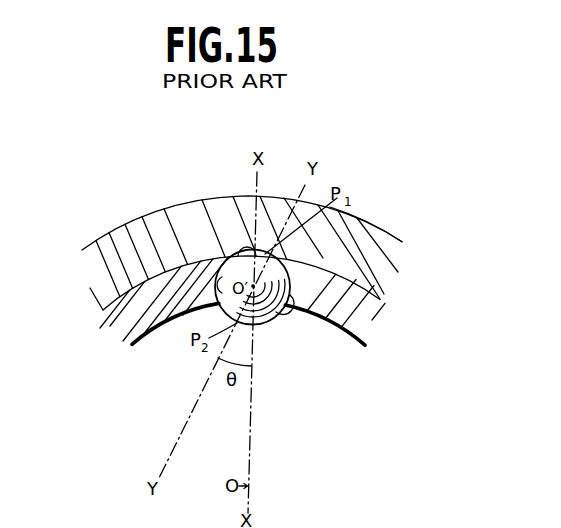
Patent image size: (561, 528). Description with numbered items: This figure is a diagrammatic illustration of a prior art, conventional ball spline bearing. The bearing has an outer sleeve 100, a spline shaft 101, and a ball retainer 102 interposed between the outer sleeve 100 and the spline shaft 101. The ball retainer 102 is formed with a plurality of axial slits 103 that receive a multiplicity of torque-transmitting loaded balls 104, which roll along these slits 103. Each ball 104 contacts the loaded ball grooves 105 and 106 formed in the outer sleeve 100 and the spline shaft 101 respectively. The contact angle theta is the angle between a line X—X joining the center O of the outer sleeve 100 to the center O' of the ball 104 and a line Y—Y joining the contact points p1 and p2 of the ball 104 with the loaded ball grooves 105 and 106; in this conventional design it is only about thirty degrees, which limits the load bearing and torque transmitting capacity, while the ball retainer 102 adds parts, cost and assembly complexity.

The outer sleeve 100 is at (139, 230).
The spline shaft 101 is at (297, 515).
The ball retainer 102 is at (103, 251).
The axial slits 103 is at (198, 262).
The torque-transmitting loaded ball 104 is at (233, 255).
The loaded ball groove 105 is at (258, 252).
The loaded ball groove 106 is at (357, 219).